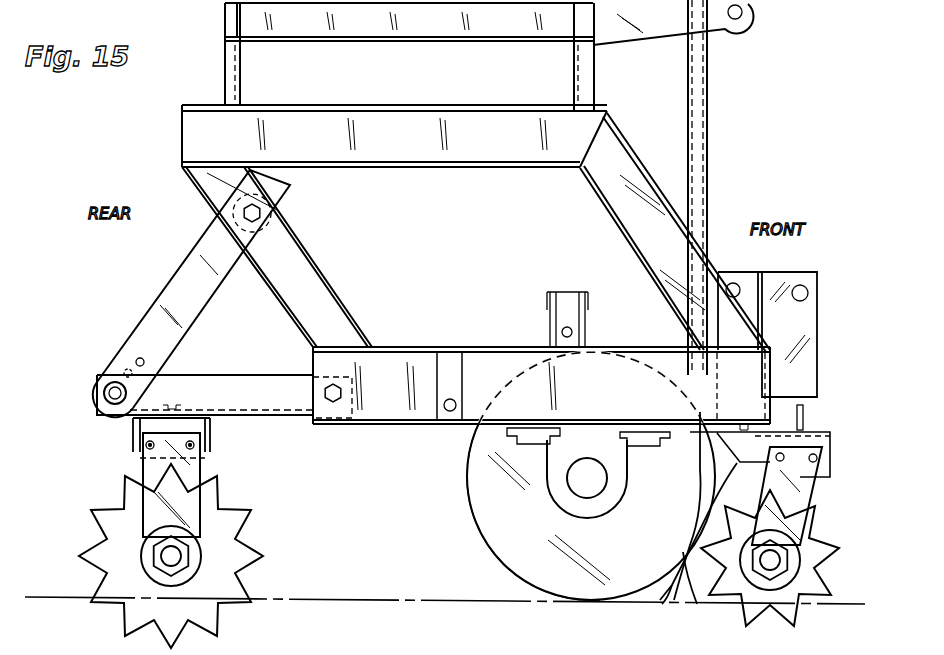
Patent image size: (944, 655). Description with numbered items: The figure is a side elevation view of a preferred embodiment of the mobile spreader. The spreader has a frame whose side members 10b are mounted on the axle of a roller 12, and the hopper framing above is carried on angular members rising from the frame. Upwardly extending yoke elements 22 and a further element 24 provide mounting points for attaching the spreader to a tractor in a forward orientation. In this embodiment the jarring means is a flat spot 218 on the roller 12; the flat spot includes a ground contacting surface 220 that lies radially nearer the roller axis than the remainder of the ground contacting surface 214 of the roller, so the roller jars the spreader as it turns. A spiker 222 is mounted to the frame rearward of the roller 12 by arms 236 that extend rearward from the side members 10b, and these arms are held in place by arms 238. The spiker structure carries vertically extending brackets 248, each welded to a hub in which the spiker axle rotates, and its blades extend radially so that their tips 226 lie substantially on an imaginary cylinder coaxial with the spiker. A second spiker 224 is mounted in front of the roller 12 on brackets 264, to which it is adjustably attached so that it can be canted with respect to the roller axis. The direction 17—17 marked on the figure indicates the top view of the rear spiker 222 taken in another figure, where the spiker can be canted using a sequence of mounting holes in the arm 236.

The further element 24 is at (737, 30).
The yoke elements 22 is at (788, 272).
The arms 238 is at (157, 308).
The direction 17— 17 is at (118, 363).
The arms 236 is at (262, 398).
The side members 10b is at (383, 407).
The roller 12 is at (473, 482).
The ground contacting surface 214 is at (500, 560).
The spiker 222 is at (176, 533).
The vertically extending brackets 248 is at (202, 493).
The tips 226 is at (250, 525).
The brackets 264 is at (707, 500).
The flat spot 218 is at (660, 586).
The ground contacting surface 220 is at (697, 604).
The second spiker 224 is at (830, 543).